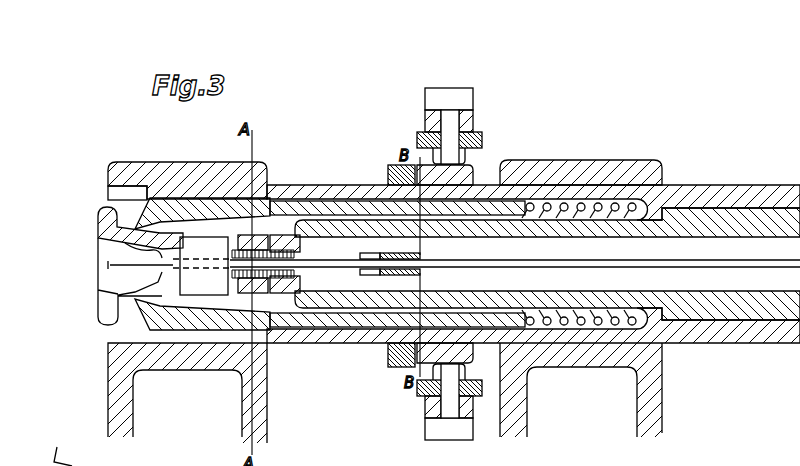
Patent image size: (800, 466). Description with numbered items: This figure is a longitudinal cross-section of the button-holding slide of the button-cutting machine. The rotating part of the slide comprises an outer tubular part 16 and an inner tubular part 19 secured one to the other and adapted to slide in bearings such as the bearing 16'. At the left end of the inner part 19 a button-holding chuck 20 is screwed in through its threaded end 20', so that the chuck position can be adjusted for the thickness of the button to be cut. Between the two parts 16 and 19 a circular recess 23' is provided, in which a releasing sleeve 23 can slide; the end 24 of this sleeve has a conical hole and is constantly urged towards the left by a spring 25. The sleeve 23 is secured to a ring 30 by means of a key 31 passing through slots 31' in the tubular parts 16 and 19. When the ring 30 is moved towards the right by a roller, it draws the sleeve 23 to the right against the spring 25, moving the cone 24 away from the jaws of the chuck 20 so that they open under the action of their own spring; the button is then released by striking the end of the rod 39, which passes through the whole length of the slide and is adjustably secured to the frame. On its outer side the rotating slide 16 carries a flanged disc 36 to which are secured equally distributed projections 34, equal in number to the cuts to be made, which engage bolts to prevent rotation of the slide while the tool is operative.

The outer tubular part of the rotating slide 16 is at (533, 241).
The bearing 16' is at (180, 277).
The inner tubular part of the rotating slide 19 is at (305, 232).
The button-holding chuck 20 is at (121, 266).
The end of the chuck 20' is at (275, 210).
The releasing sleeve 23 is at (397, 171).
The circular recess 23' is at (437, 359).
The end of the sleeve 24 is at (153, 210).
The spring 25 is at (583, 208).
The ring 30 is at (397, 363).
The key 31 is at (378, 319).
The slots 31' is at (334, 321).
The projections 34 is at (432, 98).
The flanged disc 36 is at (430, 137).
The rod 39 is at (112, 267).